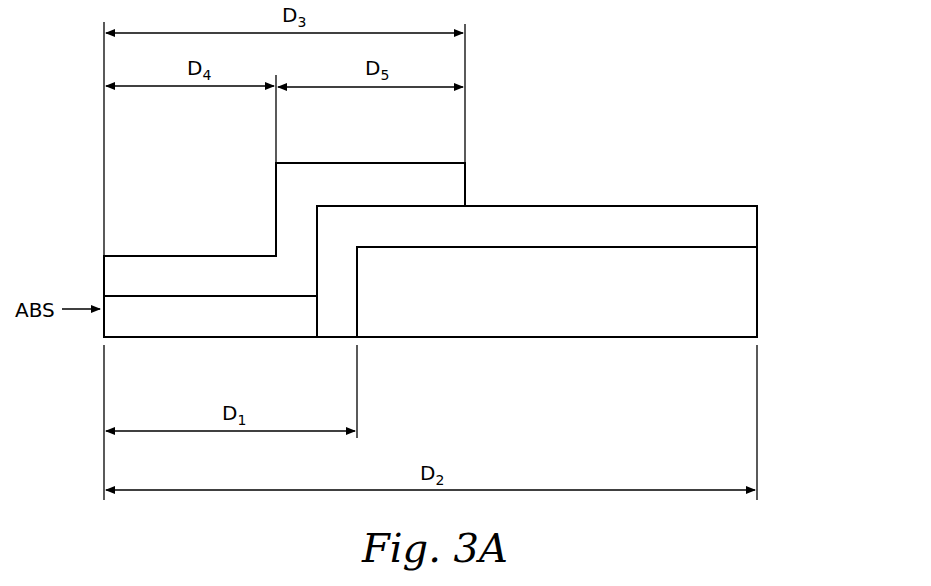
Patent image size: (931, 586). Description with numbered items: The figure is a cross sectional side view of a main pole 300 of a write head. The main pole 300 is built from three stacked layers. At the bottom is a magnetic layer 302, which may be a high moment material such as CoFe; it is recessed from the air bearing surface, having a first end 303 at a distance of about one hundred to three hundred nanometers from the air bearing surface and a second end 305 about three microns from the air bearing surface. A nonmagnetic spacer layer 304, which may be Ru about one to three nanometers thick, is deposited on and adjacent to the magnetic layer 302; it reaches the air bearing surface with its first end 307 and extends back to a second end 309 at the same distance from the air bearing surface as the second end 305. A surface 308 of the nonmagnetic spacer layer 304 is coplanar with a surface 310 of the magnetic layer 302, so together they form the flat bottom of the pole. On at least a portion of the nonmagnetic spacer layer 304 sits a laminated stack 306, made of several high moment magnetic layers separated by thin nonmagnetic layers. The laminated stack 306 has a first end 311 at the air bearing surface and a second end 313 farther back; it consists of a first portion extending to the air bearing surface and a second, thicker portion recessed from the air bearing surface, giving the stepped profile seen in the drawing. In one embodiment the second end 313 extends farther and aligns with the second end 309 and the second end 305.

The main pole 300 is at (682, 60).
The magnetic layer 302 is at (517, 301).
The first end 303 is at (359, 292).
The nonmagnetic spacer layer 304 is at (517, 237).
The second end 305 is at (759, 291).
The laminated stack 306 is at (352, 195).
The first end 307 is at (105, 319).
The surface 308 is at (195, 338).
The second end 309 is at (759, 226).
The surface 310 is at (637, 338).
The first end 311 is at (105, 277).
The second end 313 is at (467, 181).